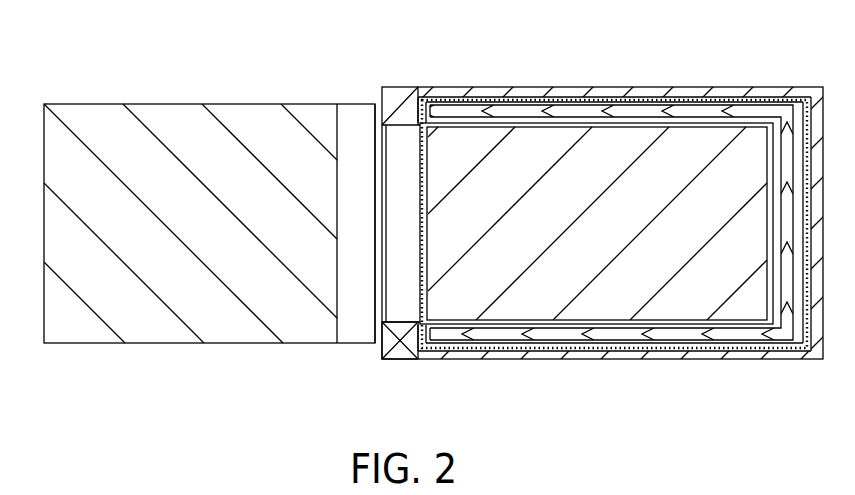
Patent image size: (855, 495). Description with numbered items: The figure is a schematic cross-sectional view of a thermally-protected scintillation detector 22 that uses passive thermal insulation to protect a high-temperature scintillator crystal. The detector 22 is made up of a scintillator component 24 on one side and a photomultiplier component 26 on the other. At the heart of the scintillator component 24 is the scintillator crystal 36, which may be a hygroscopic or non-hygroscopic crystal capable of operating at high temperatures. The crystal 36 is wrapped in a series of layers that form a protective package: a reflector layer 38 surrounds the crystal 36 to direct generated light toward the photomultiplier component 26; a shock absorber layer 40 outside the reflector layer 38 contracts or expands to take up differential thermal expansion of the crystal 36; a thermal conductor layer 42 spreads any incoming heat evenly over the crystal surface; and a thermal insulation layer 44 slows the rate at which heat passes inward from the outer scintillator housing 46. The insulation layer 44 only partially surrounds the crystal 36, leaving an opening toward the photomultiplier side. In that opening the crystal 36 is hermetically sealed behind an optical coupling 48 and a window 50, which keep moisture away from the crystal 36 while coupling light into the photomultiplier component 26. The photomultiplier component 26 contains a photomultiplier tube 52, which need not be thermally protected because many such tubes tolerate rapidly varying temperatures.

The thermally-protected scintillation detector 22 is at (174, 387).
The scintillator component 24 is at (552, 361).
The photomultiplier component 26 is at (72, 104).
The scintillator crystal 36 is at (618, 297).
The reflector layer 38 is at (713, 323).
The shock absorber layer 40 is at (507, 127).
The thermal conductor layer 42 is at (613, 112).
The thermal insulation layer 44 is at (675, 98).
The scintillator housing 46 is at (788, 96).
The optical coupling 48 is at (415, 328).
The window 50 is at (402, 150).
The photomultiplier tube 52 is at (153, 123).